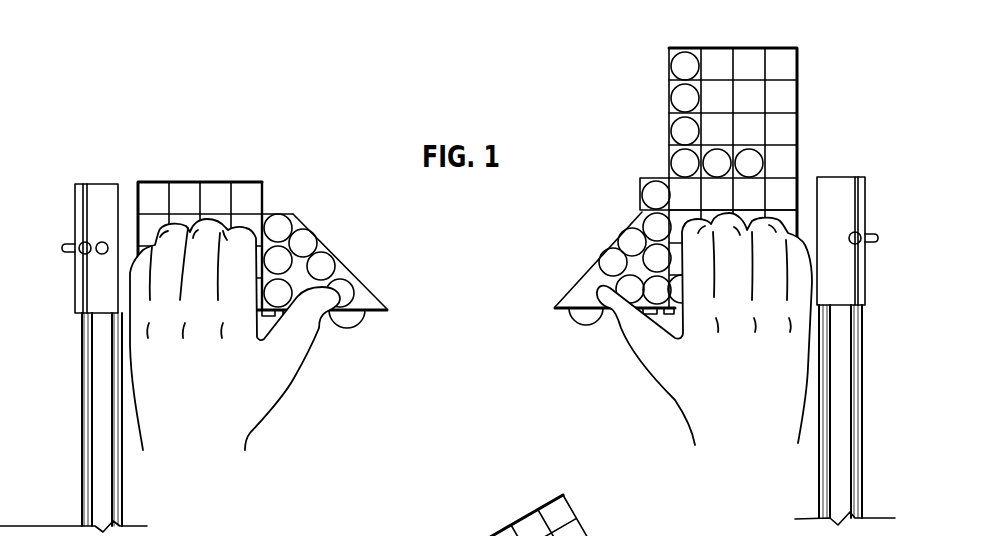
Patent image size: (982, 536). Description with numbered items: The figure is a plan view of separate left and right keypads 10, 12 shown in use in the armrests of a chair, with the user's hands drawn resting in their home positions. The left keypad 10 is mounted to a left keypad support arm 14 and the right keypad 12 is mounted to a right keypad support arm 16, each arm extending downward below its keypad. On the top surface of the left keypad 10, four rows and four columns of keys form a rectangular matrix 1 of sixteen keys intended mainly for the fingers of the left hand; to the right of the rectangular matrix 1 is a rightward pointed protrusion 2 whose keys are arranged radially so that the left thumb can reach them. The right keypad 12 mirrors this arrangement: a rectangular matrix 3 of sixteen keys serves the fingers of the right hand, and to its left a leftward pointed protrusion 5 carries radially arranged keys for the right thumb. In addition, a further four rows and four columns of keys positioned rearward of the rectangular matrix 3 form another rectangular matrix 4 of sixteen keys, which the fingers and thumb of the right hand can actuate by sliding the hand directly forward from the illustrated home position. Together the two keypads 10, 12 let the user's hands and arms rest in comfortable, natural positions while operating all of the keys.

The rectangular matrix 1 is at (138, 168).
The rightward pointed protrusion 2 is at (287, 163).
The rectangular matrix 3 is at (809, 180).
The rectangular matrix 4 is at (805, 48).
The leftward pointed protrusion 5 is at (650, 161).
The left keypad 10 is at (277, 163).
The right keypad 12 is at (663, 158).
The left keypad support arm 14 is at (103, 497).
The right keypad support arm 16 is at (833, 485).